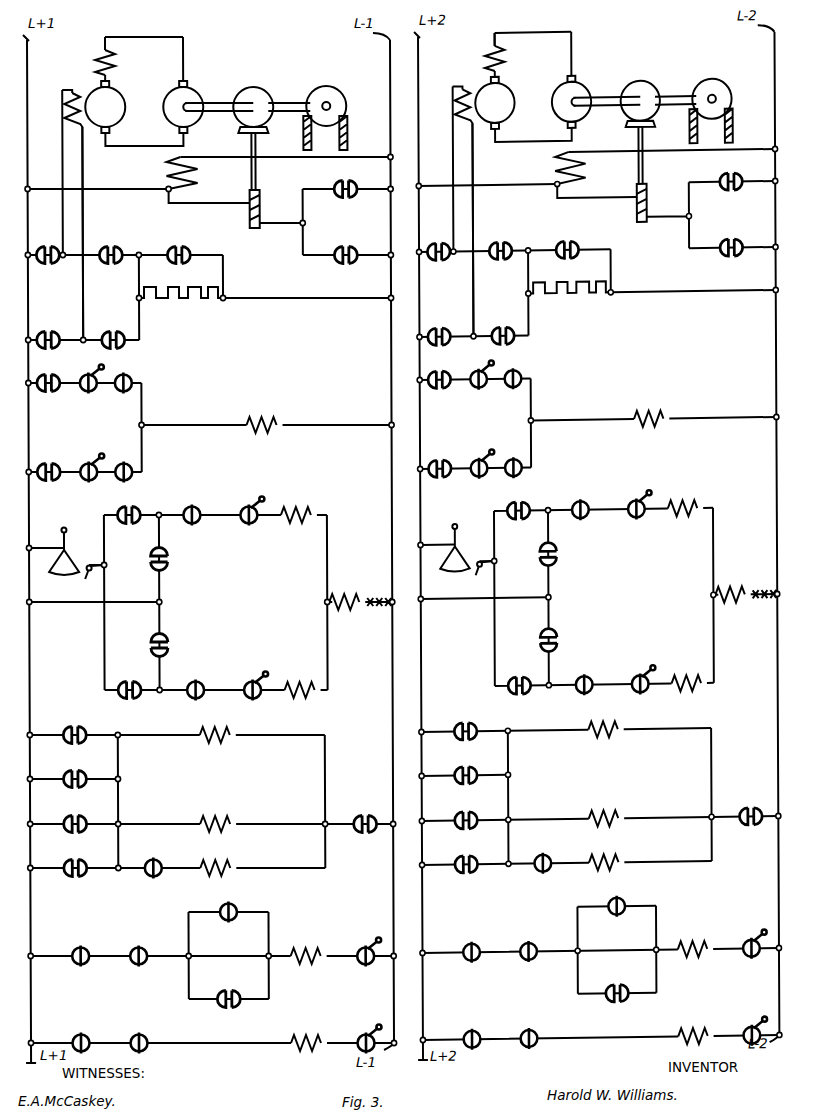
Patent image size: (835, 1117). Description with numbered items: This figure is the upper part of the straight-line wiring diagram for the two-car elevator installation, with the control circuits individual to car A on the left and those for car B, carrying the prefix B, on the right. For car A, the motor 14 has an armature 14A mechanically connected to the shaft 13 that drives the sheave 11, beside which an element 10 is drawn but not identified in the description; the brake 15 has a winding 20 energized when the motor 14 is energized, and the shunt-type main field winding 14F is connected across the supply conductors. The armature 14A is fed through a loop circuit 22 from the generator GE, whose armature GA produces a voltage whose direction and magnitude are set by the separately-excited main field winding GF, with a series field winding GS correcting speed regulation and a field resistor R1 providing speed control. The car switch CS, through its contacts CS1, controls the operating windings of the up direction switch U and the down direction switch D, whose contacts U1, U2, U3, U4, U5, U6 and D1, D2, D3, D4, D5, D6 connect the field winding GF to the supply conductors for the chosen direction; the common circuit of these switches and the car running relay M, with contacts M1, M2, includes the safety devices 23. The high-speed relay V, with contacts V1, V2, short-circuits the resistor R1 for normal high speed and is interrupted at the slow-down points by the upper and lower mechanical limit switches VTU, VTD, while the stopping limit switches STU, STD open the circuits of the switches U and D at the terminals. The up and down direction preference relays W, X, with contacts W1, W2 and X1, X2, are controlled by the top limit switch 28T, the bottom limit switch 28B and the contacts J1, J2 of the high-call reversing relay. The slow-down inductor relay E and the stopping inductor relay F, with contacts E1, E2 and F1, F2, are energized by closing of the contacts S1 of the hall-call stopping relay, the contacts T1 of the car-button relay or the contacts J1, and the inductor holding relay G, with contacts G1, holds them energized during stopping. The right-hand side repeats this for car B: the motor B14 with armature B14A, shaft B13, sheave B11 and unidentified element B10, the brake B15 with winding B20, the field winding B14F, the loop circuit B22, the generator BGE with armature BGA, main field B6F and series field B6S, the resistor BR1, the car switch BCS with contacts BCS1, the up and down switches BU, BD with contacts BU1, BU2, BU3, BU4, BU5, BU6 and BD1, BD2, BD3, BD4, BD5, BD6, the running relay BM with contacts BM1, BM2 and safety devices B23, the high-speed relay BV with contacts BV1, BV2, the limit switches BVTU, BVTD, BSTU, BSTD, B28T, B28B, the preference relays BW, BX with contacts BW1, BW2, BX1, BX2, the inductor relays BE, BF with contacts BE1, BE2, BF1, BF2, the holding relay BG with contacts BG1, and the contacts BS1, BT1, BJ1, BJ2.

The brake shoes 10 is at (325, 133).
The brake drum motor 11 is at (338, 80).
The shaft 13 is at (284, 100).
The motor 14 is at (191, 89).
The motor armature terminal 14A is at (168, 89).
The motor field resistor 14F is at (156, 167).
The brake 15 is at (262, 82).
The brake solenoid 20 is at (244, 212).
The generator-motor loop circuit 22 is at (140, 40).
The variable resistor element 23 is at (377, 592).
The generator exciter field GE is at (88, 51).
The generator series field GS is at (116, 58).
The generator field GF is at (63, 206).
The generator armature GA is at (114, 119).
The contact U1 is at (352, 180).
The contact D2 is at (347, 246).
The contact U2 is at (47, 246).
The contact D1 is at (110, 246).
The contact V1 is at (178, 246).
The resistor R1 is at (181, 285).
The contact D3 is at (48, 331).
The contact U3 is at (113, 331).
The contact U4 is at (52, 374).
The switch VTU is at (82, 389).
The contact E1 is at (130, 374).
The relay coil V is at (261, 415).
The contact D4 is at (48, 463).
The switch VTD is at (89, 457).
The contact E2 is at (122, 464).
The contact W1 is at (137, 506).
The contact F1 is at (190, 506).
The switch STU is at (242, 506).
The relay coil U is at (296, 506).
The control switch CS is at (59, 546).
The control switch contact CS1 is at (77, 581).
The contact U5 is at (174, 559).
The contact D5 is at (175, 644).
The relay coil M is at (344, 594).
The contact X1 is at (128, 681).
The contact F2 is at (192, 682).
The switch STD is at (251, 677).
The relay coil D is at (299, 680).
The contact T1 is at (72, 725).
The relay coil G is at (215, 725).
The contact J1 is at (68, 769).
The contact S1 is at (67, 814).
The relay coil E is at (215, 812).
The contact M1 is at (365, 813).
The contact G1 is at (66, 859).
The contact V2 is at (162, 859).
The relay coil F is at (216, 855).
The contact J2 is at (239, 904).
The contact D6 is at (71, 950).
The contact X2 is at (145, 949).
The contact M2 is at (227, 991).
The relay coil W is at (306, 945).
The limit switch 28T is at (362, 943).
The contact U6 is at (71, 1037).
The contact W2 is at (148, 1035).
The relay coil X is at (306, 1033).
The limit switch 28B is at (363, 1030).
The loop circuit B22 is at (533, 26).
The generator exciter field BGE is at (473, 41).
The generator series field B6S is at (511, 55).
The generator field B6F is at (450, 203).
The generator armature BGA is at (508, 100).
The motor B14 is at (581, 94).
The motor armature B14A is at (544, 105).
The brake B15 is at (640, 93).
The shaft B13 is at (674, 89).
The brake drum B11 is at (712, 88).
The brake shoes B10 is at (710, 126).
The motor field resistor B14F is at (542, 168).
The brake solenoid B20 is at (616, 203).
The contact BU1 is at (740, 173).
The contact BD2 is at (735, 239).
The contact BU2 is at (436, 243).
The contact BD1 is at (501, 243).
The contact BV1 is at (566, 242).
The resistor BR1 is at (569, 280).
The contact BD3 is at (436, 328).
The contact BU3 is at (500, 328).
The contact BU4 is at (437, 371).
The switch BVTU is at (482, 370).
The contact BE1 is at (526, 370).
The relay coil BV is at (649, 409).
The contact BD4 is at (437, 460).
The switch BVTD is at (474, 454).
The contact BE2 is at (511, 460).
The contact BW1 is at (523, 502).
The contact BF1 is at (576, 502).
The switch BSTU is at (627, 499).
The relay coil BU is at (685, 499).
The control switch BCS is at (446, 543).
The control switch contact BCS1 is at (463, 577).
The contact BU5 is at (565, 551).
The contact BD5 is at (565, 636).
The relay coil BM is at (731, 583).
The variable resistor element B23 is at (751, 607).
The contact BX1 is at (516, 677).
The contact BF2 is at (577, 677).
The switch BSTD is at (635, 671).
The relay coil BD is at (686, 674).
The contact BT1 is at (458, 722).
The relay coil BG is at (603, 720).
The contact BJ1 is at (456, 766).
The contact BS1 is at (455, 811).
The relay coil BE is at (604, 807).
The contact BM1 is at (749, 806).
The contact BG1 is at (454, 856).
The contact BV2 is at (549, 853).
The relay coil BF is at (605, 851).
The contact BJ2 is at (628, 899).
The contact BD6 is at (459, 946).
The contact BX2 is at (519, 944).
The contact BM2 is at (609, 986).
The relay coil BW is at (690, 939).
The limit switch B28T is at (742, 933).
The contact BU6 is at (459, 1033).
The contact BW2 is at (535, 1031).
The relay coil BX is at (693, 1027).
The limit switch B28B is at (744, 1022).